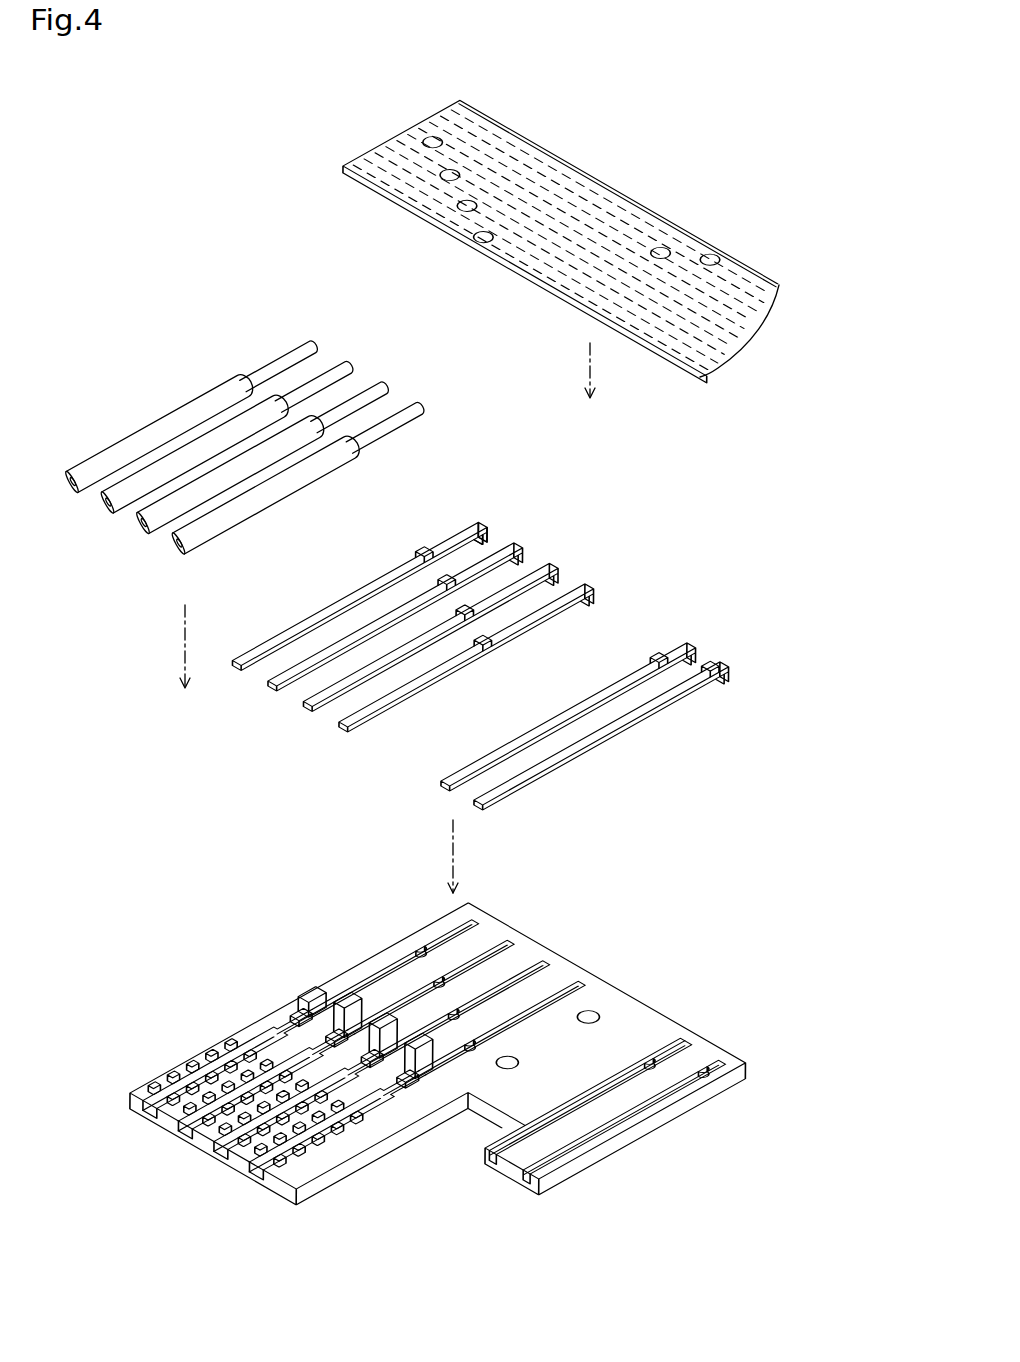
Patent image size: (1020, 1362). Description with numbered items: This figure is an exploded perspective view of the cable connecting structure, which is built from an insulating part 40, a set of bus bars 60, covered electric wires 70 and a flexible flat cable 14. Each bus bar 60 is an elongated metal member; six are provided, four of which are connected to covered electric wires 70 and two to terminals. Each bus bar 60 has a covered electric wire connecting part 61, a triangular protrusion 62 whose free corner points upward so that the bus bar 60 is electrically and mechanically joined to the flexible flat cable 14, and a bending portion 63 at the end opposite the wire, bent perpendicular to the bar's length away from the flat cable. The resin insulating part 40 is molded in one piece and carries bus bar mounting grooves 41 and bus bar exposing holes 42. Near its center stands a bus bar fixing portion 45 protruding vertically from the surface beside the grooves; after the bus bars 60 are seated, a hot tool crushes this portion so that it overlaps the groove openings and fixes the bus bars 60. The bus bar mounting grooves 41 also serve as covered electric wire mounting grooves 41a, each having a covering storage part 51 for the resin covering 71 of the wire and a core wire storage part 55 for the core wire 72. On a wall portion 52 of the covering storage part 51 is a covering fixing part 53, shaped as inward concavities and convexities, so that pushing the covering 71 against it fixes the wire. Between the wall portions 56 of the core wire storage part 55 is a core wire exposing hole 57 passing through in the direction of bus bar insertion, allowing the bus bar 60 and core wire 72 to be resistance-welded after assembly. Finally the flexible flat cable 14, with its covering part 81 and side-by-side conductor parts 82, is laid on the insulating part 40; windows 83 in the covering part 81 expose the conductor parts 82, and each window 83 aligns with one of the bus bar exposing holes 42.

The flexible flat cable 14 is at (583, 232).
The covering part 81 is at (515, 140).
The conductor parts 82 is at (490, 120).
The windows 83 is at (712, 256).
The covered electric wires 70 is at (293, 393).
The covering 71 is at (163, 420).
The core wire 72 is at (258, 372).
The bus bars 60 is at (522, 619).
The covered electric wire connecting part 61 is at (298, 622).
The triangular protrusion 62 is at (418, 553).
The bending portion 63 is at (478, 540).
The insulating part 40 is at (473, 1048).
The bus bar mounting grooves 41 is at (465, 923).
The covered electric wire mounting grooves 41a is at (277, 1055).
The bus bar exposing holes 42 is at (423, 948).
The bus bar fixing portion 45 is at (352, 1003).
The covering storage part 51 is at (188, 1060).
The wall portion 52 is at (152, 1108).
The covering fixing part 53 is at (175, 1120).
The core wire storage part 55 is at (253, 1032).
The wall portions 56 is at (272, 1033).
The core wire exposing hole 57 is at (304, 1025).